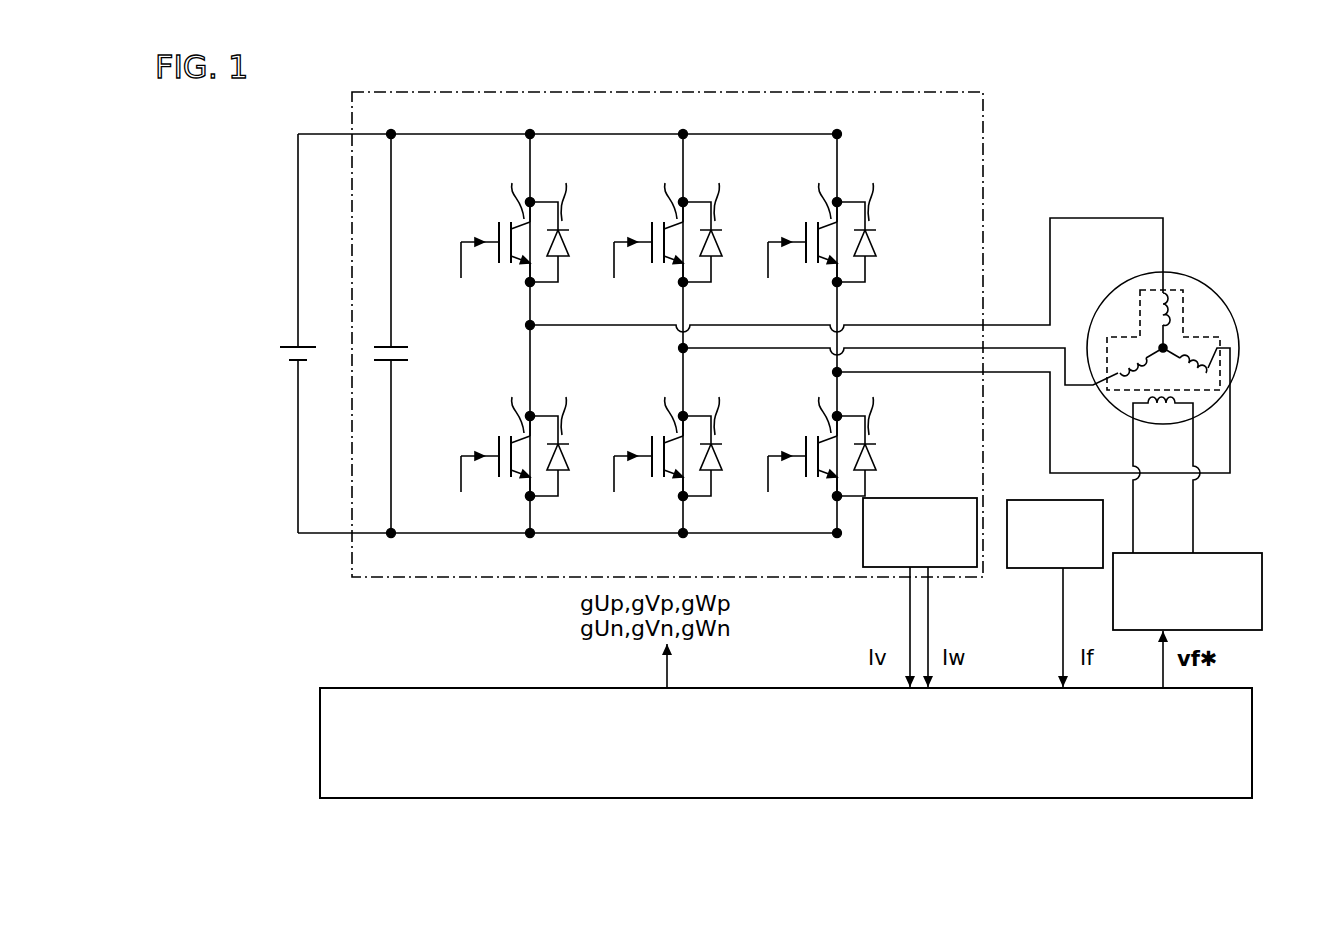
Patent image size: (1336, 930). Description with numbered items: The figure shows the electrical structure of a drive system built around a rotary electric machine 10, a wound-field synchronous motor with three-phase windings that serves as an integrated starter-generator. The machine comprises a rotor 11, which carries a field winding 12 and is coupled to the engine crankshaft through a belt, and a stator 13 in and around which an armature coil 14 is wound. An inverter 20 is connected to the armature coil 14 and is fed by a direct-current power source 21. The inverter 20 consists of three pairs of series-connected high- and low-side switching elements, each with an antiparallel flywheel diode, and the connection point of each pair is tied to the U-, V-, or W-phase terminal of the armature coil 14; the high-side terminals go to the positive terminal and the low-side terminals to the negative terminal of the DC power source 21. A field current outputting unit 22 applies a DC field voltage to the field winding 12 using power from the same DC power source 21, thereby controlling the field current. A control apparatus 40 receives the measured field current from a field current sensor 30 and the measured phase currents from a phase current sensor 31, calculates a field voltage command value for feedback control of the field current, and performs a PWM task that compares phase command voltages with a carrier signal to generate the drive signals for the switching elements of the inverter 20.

The rotary electric machine 10 is at (1198, 376).
The rotor 11 is at (1224, 303).
The field winding 12 is at (1167, 405).
The stator 13 is at (1185, 289).
The armature coil 14 is at (1160, 303).
The inverter 20 is at (985, 160).
The direct-current power source 21 is at (299, 347).
The field current outputting unit 22 is at (1263, 600).
The field current sensor 30 is at (1016, 569).
The phase current sensor 31 is at (950, 498).
The control apparatus 40 is at (1253, 763).